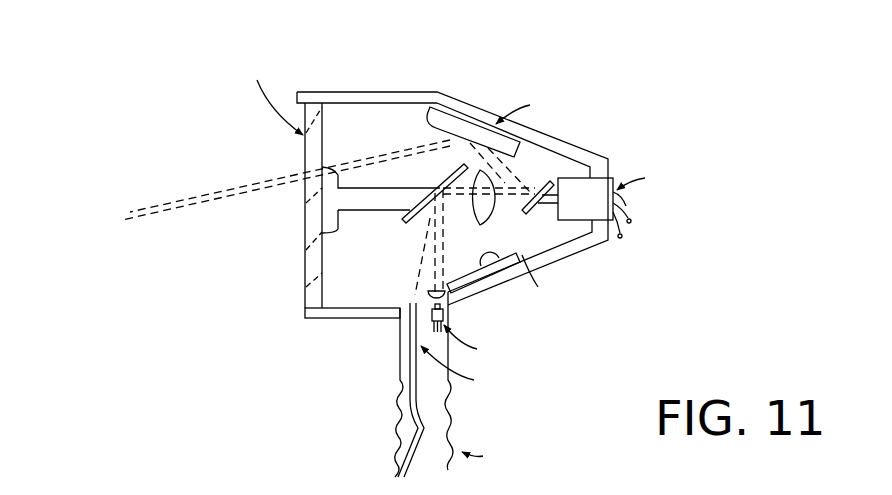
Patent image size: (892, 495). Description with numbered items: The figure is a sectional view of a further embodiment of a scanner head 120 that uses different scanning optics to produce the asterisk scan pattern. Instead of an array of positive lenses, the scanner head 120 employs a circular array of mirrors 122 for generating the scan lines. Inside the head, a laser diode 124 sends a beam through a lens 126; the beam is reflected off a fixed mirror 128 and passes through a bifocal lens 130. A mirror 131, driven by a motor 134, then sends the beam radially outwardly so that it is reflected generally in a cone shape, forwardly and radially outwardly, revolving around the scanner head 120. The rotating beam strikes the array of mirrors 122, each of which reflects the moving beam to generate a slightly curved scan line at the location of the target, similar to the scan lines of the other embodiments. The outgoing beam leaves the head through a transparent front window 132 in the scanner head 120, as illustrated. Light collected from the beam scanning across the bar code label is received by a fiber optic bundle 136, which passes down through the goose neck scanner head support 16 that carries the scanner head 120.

The scanner head 120 is at (438, 52).
The mirrors 122 is at (437, 103).
The laser diode 124 is at (444, 312).
The lens 126 is at (424, 288).
The fixed mirror 128 is at (423, 234).
The bifocal lens 130 is at (495, 219).
The mirror 131 is at (546, 180).
The transparent front window 132 is at (303, 284).
The motor 134 is at (621, 203).
The fiber optic bundle 136 is at (411, 358).
The goose neck scanner head support 16 is at (397, 432).